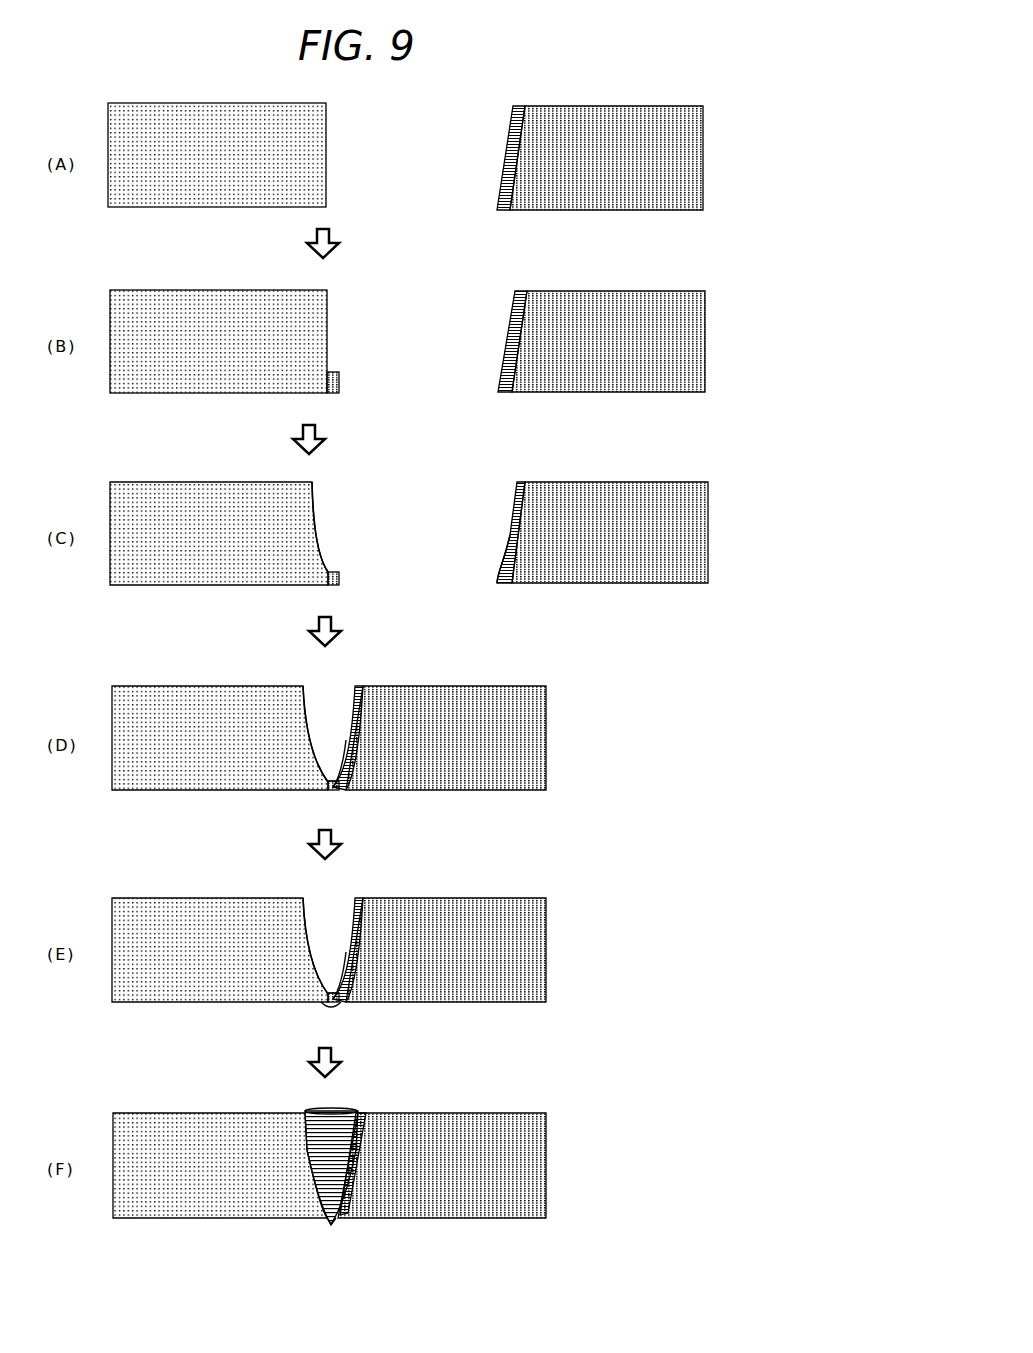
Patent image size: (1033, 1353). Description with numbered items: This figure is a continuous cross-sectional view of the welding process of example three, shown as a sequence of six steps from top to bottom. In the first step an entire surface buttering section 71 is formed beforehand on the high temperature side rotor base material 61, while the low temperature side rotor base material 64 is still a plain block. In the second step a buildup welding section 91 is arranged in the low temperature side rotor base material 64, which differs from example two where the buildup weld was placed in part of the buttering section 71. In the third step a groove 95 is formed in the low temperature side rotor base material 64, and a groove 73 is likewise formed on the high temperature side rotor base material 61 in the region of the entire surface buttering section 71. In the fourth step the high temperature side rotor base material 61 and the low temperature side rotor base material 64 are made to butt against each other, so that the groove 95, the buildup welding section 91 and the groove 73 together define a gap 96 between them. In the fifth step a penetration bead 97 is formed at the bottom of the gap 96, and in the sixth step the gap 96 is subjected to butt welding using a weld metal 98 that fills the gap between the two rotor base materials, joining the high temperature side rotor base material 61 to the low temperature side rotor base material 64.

The high temperature side rotor base material 61 is at (636, 107).
The low temperature side rotor base material 64 is at (205, 108).
The entire surface buttering section 71 is at (504, 182).
The groove 73 is at (510, 545).
The buildup welding section 91 is at (341, 372).
The groove 95 is at (316, 520).
The gap 96 is at (323, 748).
The penetration bead 97 is at (328, 1008).
The weld metal 98 is at (330, 1128).